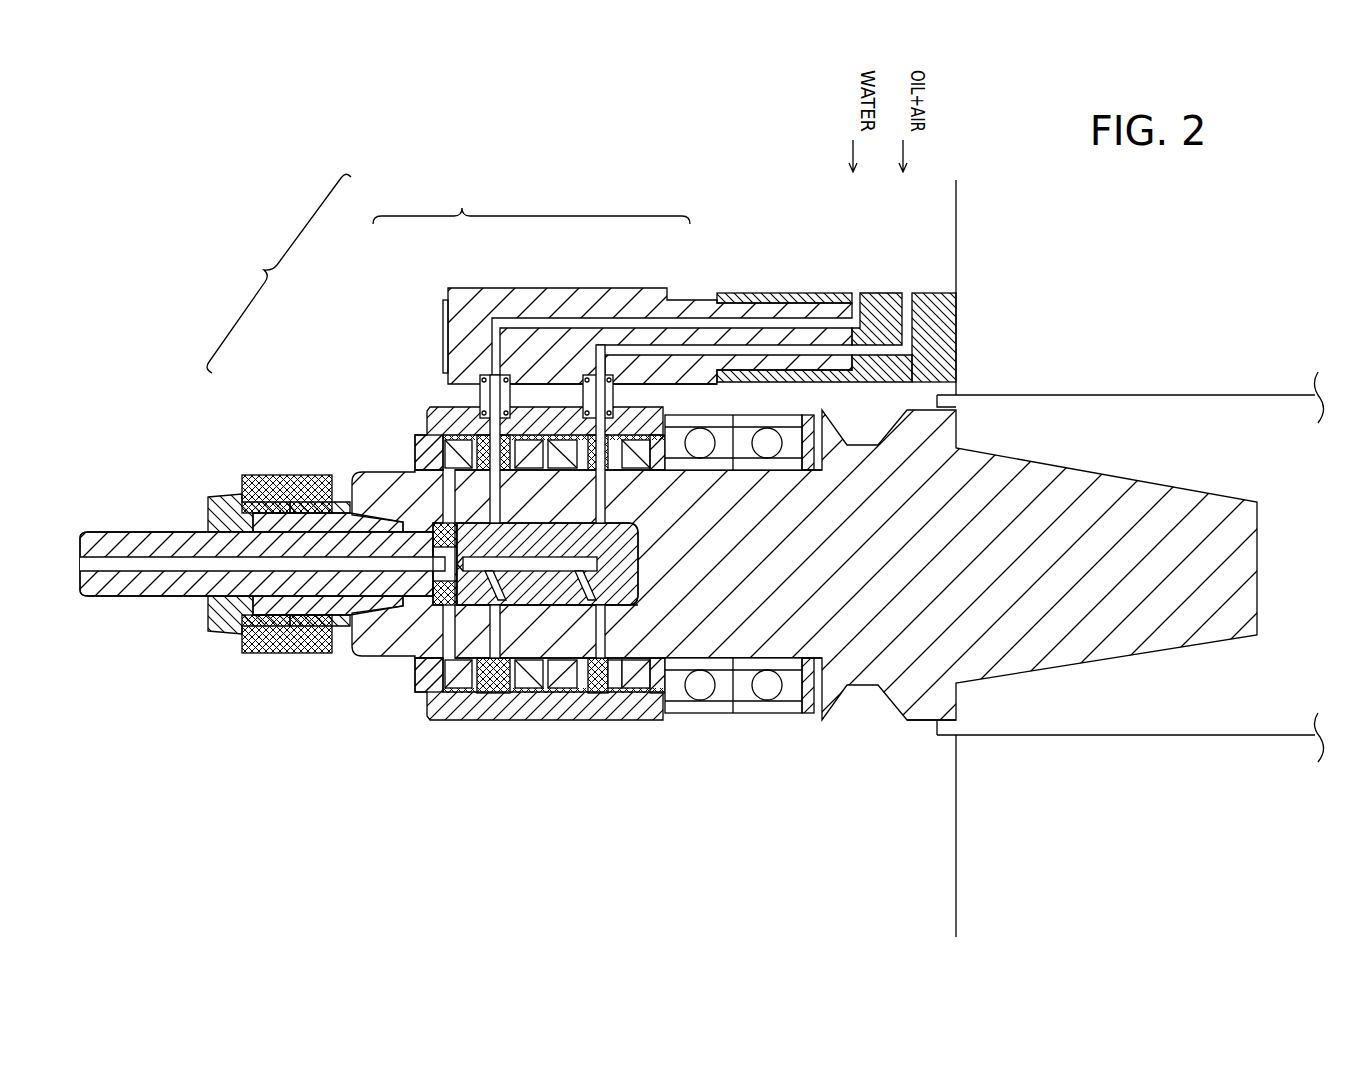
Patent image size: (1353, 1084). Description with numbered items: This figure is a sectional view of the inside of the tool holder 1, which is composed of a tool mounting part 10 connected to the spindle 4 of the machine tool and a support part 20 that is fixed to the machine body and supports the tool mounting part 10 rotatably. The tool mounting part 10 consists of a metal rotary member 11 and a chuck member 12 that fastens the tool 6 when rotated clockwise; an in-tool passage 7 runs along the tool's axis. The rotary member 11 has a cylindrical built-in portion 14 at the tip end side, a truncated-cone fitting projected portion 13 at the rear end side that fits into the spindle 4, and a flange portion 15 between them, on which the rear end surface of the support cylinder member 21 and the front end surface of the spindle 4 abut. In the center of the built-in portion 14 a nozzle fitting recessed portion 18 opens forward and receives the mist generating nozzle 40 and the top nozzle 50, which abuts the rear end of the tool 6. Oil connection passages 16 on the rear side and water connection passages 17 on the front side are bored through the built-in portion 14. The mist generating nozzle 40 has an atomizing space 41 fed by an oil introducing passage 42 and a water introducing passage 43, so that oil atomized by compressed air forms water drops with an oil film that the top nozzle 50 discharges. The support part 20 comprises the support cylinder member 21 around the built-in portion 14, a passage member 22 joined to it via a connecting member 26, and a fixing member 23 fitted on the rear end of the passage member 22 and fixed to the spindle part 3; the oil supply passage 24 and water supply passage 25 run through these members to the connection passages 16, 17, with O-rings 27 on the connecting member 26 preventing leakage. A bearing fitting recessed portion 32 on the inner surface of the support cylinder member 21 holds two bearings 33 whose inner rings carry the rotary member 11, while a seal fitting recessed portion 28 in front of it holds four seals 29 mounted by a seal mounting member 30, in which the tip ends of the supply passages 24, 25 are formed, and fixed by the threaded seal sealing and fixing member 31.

The tool holder 1 is at (279, 273).
The spindle part 3 is at (973, 840).
The spindle 4 is at (1055, 393).
The tool 6 is at (143, 533).
The in-tool passage 7 is at (143, 565).
The tool mounting part 10 is at (230, 416).
The rotary member 11 is at (353, 487).
The chuck member 12 is at (280, 470).
The fitting projected portion 13 is at (1110, 498).
The built-in portion 14 is at (405, 650).
The flange portion 15 is at (925, 710).
The oil connection passage 16 is at (606, 513).
The water connection passage 17 is at (500, 508).
The nozzle fitting recessed portion 18 is at (360, 657).
The support part 20 is at (531, 201).
The support cylinder member 21 is at (421, 413).
The passage member 22 is at (540, 298).
The fixing member 23 is at (717, 297).
The oil supply passage 24 is at (905, 292).
The water supply passage 25 is at (855, 292).
The connecting member 26 is at (674, 401).
The O-ring 27 is at (480, 396).
The seal fitting recessed portion 28 is at (615, 680).
The seal 29 is at (633, 683).
The seal mounting member 30 is at (603, 690).
The seal sealing and fixing member 31 is at (420, 670).
The bearing fitting recessed portion 32 is at (793, 713).
The bearing 33 is at (773, 713).
The mist generating nozzle 40 is at (443, 515).
The atomizing space 41 is at (522, 645).
The oil introducing passage 42 is at (587, 545).
The water introducing passage 43 is at (525, 545).
The top nozzle 50 is at (435, 528).